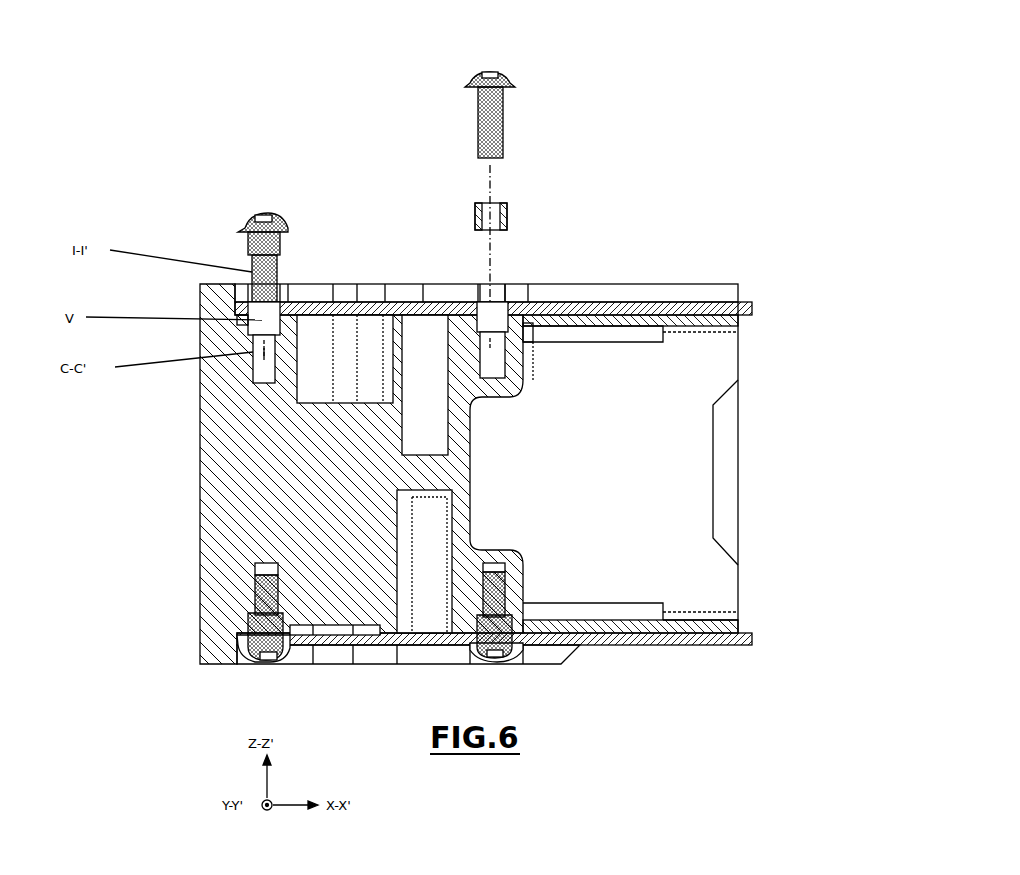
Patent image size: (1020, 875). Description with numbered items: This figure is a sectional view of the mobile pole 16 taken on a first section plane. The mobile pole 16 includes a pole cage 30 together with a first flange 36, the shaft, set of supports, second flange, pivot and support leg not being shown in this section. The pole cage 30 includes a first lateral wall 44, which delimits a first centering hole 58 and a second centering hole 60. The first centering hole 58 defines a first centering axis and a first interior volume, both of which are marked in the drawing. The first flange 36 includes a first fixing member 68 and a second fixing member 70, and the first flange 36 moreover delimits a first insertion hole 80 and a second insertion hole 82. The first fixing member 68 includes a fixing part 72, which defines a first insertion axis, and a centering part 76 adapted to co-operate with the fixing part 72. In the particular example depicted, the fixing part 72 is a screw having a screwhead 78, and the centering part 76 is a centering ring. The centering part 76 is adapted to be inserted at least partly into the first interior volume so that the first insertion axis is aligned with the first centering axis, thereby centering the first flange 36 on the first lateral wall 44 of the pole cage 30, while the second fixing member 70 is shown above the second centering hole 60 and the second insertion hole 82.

The mobile pole 16 is at (258, 140).
The pole cage 30 is at (718, 350).
The first flange 36 is at (632, 290).
The first lateral wall 44 is at (420, 300).
The first centering hole 58 is at (245, 320).
The second centering hole 60 is at (525, 290).
The first fixing member 68 is at (290, 200).
The second fixing member 70 is at (522, 68).
The fixing part 72 is at (280, 267).
The centering part 76 is at (285, 243).
The screwhead 78 is at (248, 216).
The first insertion hole 80 is at (290, 284).
The second insertion hole 82 is at (470, 284).